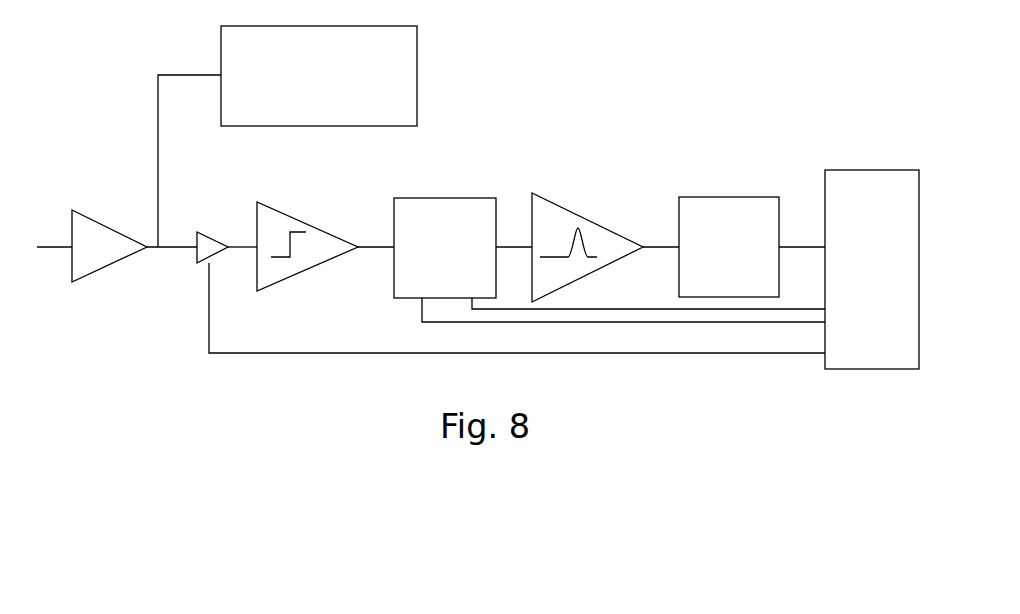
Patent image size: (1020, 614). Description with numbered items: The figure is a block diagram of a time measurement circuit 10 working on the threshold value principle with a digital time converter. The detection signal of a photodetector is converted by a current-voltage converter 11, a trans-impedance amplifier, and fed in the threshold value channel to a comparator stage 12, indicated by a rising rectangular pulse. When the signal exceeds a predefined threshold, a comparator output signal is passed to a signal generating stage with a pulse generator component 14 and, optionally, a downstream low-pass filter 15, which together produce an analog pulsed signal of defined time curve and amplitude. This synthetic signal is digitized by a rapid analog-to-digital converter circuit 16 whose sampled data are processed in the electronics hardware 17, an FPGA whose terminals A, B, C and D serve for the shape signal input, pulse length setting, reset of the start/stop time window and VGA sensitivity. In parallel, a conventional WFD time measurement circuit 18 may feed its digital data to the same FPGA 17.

The time measurement circuit 10 is at (511, 98).
The current-voltage converter 11 is at (93, 220).
The comparator stage 12 is at (282, 213).
The pulse generator component 14 is at (447, 198).
The low-pass filter 15 is at (570, 207).
The analog-to-digital converter circuit 16 is at (731, 197).
The electronics hardware 17 is at (871, 369).
The WFD time measurement circuit 18 is at (324, 88).